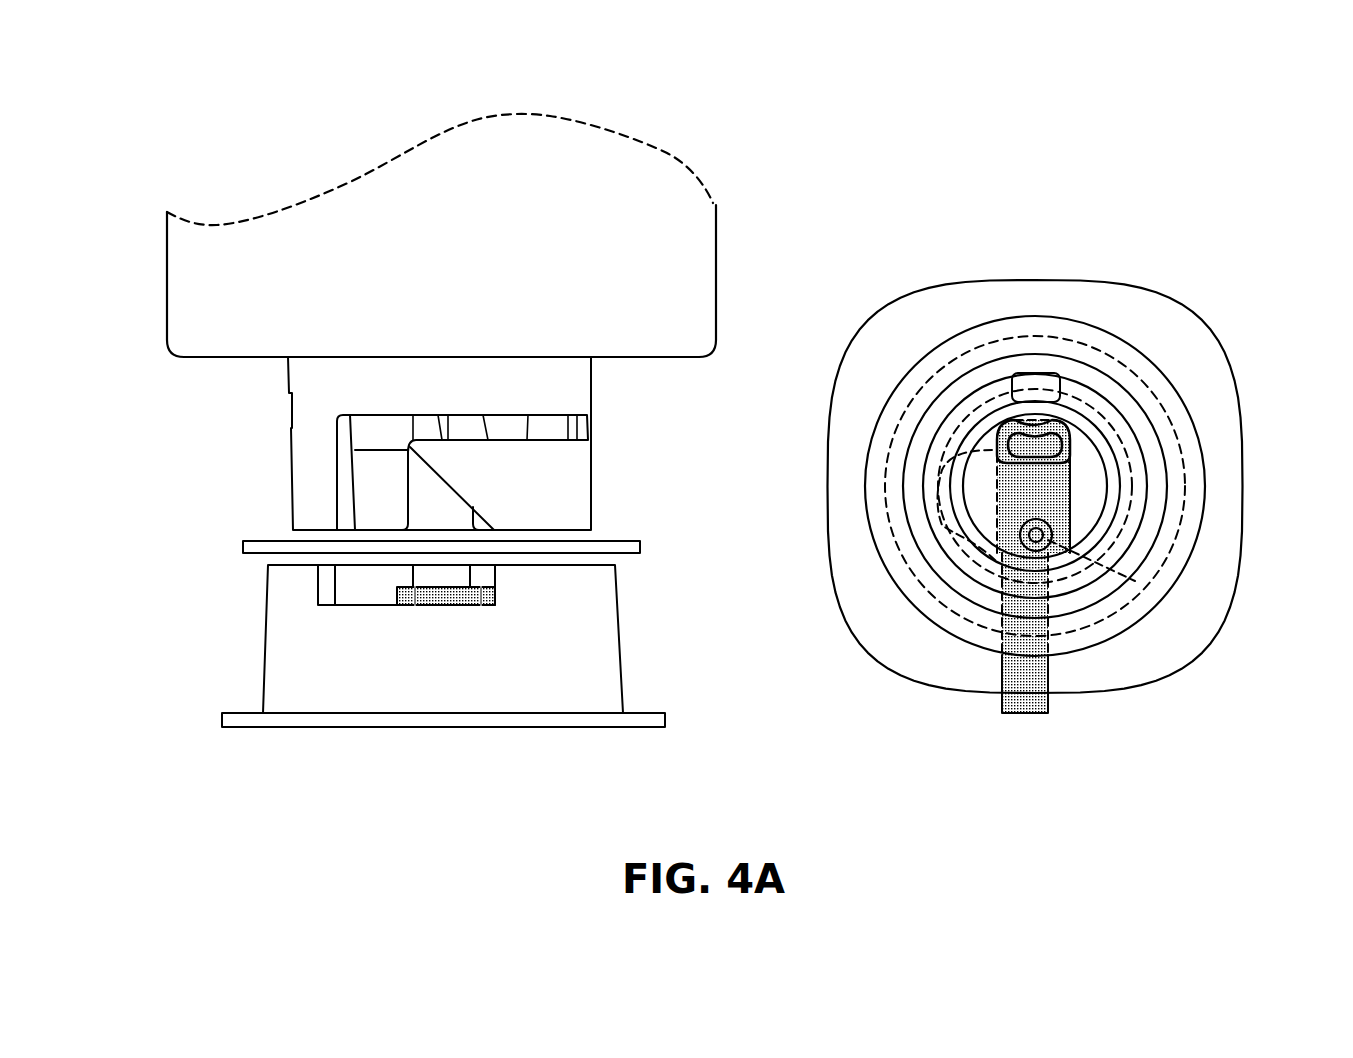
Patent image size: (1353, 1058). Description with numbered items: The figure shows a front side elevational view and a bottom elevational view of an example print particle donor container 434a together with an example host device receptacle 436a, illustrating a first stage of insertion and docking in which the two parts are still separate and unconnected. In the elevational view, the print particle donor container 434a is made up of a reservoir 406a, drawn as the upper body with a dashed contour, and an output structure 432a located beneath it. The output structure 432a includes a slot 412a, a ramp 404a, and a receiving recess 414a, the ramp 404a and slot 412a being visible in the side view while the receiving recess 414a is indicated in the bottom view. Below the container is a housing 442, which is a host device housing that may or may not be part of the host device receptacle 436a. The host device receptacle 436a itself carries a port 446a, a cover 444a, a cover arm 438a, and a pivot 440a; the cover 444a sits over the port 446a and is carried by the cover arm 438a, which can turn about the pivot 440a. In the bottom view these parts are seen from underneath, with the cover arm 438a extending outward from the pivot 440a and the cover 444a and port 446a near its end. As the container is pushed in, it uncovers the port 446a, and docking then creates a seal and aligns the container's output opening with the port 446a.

The print particle donor container 434a is at (160, 102).
The reservoir 406a is at (716, 268).
The output structure 432a is at (366, 443).
The slot 412a is at (502, 414).
The ramp 404a is at (468, 498).
The housing 442 is at (640, 540).
The host device receptacle 436a is at (212, 560).
The cover arm 438a is at (413, 605).
The port 446a is at (1053, 430).
The cover 444a is at (1070, 477).
The pivot 440a is at (1025, 542).
The receiving recess 414a is at (1052, 540).